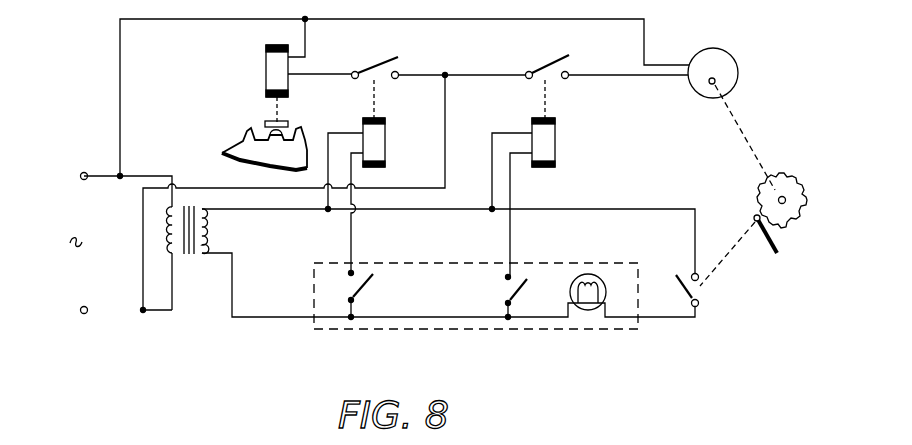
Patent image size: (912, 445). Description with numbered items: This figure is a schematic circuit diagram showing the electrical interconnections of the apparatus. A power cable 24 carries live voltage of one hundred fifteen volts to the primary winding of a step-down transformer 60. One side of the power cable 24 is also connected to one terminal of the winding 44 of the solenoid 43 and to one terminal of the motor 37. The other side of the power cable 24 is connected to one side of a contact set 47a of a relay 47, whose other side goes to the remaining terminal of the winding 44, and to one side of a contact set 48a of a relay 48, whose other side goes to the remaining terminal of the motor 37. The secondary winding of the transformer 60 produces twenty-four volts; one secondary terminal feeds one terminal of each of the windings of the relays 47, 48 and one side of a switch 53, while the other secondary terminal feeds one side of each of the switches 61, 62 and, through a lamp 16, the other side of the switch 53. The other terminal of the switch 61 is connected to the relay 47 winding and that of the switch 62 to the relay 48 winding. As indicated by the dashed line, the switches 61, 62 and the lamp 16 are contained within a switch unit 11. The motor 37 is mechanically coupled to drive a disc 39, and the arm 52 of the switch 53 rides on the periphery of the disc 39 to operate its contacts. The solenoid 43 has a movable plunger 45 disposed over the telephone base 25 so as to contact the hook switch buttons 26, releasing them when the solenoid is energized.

The switch unit 11 is at (478, 330).
The lamp 16 is at (577, 277).
The power cable 24 is at (102, 176).
The base 25 is at (228, 151).
The buttons 26 is at (266, 131).
The motor 37 is at (738, 62).
The disc 39 is at (803, 186).
The solenoid 43 is at (240, 100).
The winding 44 is at (266, 88).
The plunger 45 is at (288, 122).
The relay 47 is at (386, 135).
The contact set 47a is at (374, 74).
The relay 48 is at (556, 133).
The contact set 48a is at (560, 62).
The arm 52 is at (776, 240).
The switch 53 is at (738, 286).
The step-down transformer 60 is at (188, 262).
The switch 61 is at (360, 288).
The switch 62 is at (508, 290).